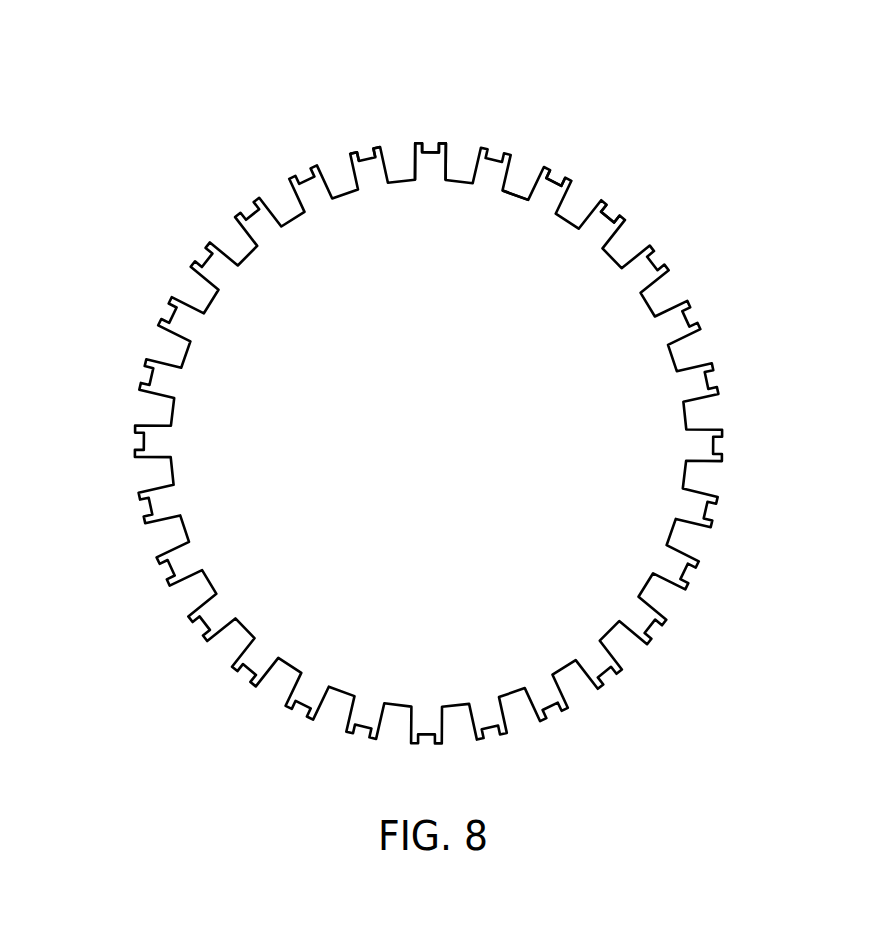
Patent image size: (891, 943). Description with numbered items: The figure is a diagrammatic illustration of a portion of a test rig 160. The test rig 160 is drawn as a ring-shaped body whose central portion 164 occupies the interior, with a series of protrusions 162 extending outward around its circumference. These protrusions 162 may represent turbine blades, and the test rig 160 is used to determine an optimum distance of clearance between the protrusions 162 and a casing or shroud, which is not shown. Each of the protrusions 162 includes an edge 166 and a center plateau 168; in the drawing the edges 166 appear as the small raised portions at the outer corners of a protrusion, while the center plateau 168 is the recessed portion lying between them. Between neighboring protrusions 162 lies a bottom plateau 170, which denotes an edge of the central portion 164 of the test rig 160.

The test rig 160 is at (501, 388).
The protrusions 162 is at (446, 160).
The central portion 164 is at (586, 360).
The edge 166 is at (375, 147).
The center plateau 168 is at (608, 213).
The bottom plateau 170 is at (521, 189).